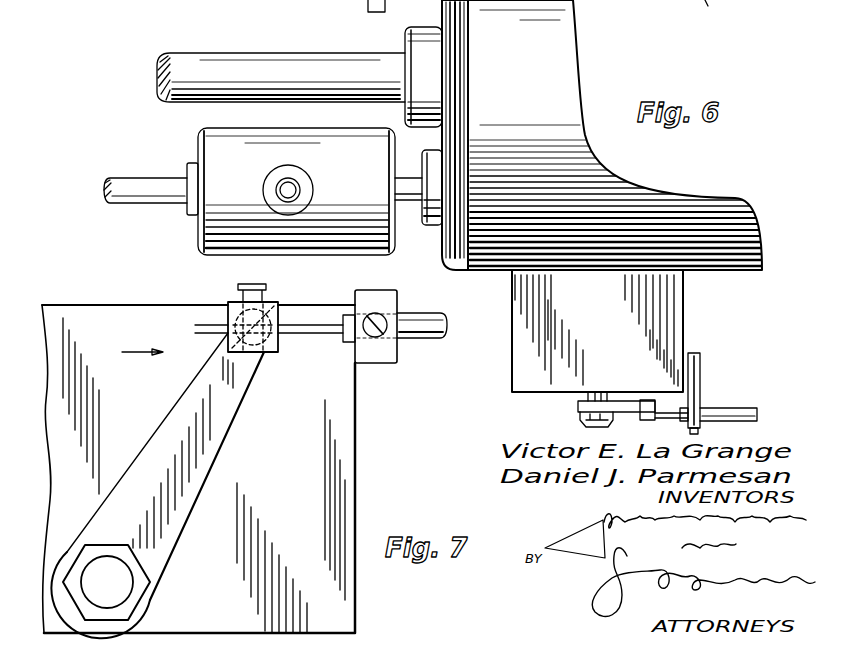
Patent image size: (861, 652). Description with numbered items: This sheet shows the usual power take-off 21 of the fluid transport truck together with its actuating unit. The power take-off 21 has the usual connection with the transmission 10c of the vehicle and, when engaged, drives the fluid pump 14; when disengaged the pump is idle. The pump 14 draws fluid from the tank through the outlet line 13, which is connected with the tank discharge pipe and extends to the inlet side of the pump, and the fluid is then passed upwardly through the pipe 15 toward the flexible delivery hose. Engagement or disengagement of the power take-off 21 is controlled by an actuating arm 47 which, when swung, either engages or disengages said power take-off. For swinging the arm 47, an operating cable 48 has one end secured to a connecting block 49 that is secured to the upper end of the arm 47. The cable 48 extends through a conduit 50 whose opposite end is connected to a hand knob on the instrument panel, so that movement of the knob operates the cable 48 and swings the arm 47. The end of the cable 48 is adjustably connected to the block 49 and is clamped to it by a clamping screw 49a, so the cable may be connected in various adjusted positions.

In FIG. 6, the transmission 10c is at (737, 216).
In FIG. 6, the outlet line 13 is at (137, 181).
In FIG. 6, the fluid pump 14 is at (197, 242).
In FIG. 6, the pipe 15 is at (300, 187).
In FIG. 6, the power take-off 21 is at (680, 296).
In FIG. 7, the power take-off 21 is at (357, 433).
In FIG. 6, the actuating arm 47 is at (578, 405).
In FIG. 7, the actuating arm 47 is at (220, 430).
In FIG. 7, the operating cable 48 is at (305, 336).
In FIG. 6, the connecting block 49 is at (650, 422).
In FIG. 7, the connecting block 49 is at (265, 353).
In FIG. 7, the clamping screw 49a is at (242, 293).
In FIG. 6, the conduit 50 is at (733, 397).
In FIG. 7, the conduit 50 is at (428, 342).